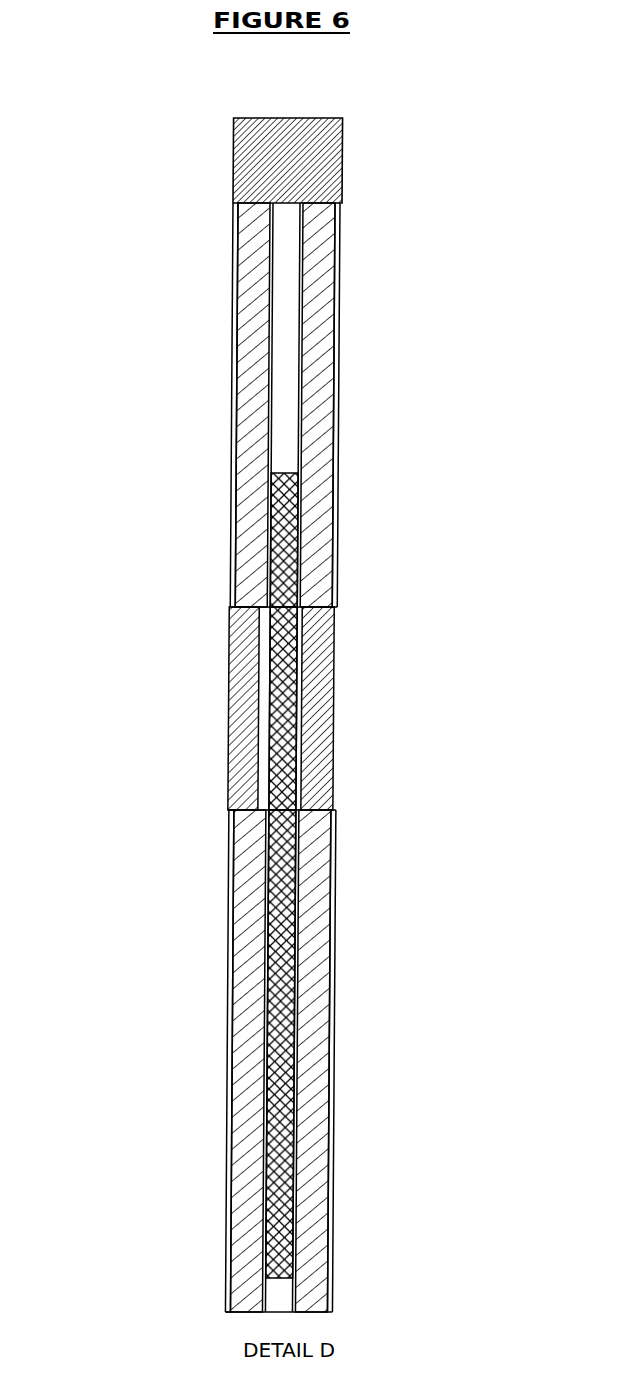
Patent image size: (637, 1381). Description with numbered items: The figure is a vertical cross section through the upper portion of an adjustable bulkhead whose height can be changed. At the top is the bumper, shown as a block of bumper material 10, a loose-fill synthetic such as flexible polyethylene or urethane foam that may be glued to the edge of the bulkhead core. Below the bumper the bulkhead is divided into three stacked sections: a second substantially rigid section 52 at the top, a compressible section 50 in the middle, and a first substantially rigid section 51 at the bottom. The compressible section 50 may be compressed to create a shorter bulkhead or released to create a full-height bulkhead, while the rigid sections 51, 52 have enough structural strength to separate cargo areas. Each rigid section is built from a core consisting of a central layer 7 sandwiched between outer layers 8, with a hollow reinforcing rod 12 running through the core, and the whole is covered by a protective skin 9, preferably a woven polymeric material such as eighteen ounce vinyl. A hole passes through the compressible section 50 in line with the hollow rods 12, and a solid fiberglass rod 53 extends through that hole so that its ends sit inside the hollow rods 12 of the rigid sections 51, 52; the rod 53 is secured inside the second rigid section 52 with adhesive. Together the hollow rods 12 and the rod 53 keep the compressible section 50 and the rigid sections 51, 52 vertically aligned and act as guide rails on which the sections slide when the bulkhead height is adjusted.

The bumper material 10 is at (330, 148).
The hollow reinforcing rod 12 is at (305, 313).
The rod 53 is at (294, 475).
The compressible section 50 is at (338, 608).
The first substantially rigid section 51 is at (333, 1300).
The second substantially rigid section 52 is at (233, 600).
The central layer 7 is at (250, 1043).
The outer layer 8 is at (229, 1123).
The protective skin 9 is at (229, 1203).